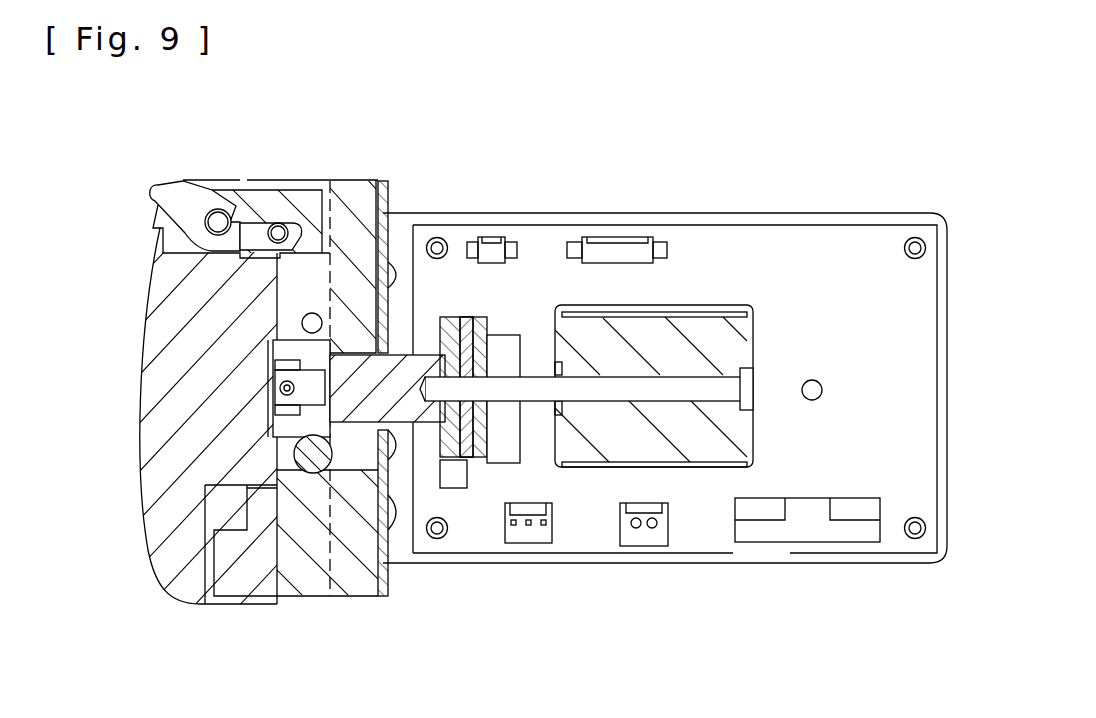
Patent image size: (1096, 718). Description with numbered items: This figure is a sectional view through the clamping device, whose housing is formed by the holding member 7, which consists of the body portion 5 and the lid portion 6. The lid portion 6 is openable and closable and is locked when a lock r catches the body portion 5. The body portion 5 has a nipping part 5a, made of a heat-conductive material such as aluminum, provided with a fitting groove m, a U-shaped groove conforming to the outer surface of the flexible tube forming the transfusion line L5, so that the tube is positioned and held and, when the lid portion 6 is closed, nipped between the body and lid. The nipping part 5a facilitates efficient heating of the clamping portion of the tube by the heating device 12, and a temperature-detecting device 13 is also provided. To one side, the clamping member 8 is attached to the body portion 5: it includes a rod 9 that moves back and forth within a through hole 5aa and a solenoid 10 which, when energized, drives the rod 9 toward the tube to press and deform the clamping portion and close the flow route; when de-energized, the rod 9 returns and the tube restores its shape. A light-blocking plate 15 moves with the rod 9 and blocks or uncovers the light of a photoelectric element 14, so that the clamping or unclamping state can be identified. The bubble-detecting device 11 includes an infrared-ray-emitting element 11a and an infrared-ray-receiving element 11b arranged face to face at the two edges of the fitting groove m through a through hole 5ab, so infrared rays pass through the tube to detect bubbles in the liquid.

The body portion 5 is at (343, 190).
The nipping part 5a is at (258, 500).
The through hole 5aa is at (352, 356).
The through hole 5ab is at (378, 565).
The lid portion 6 is at (152, 288).
The holding member 7 is at (128, 244).
The clamping member 8 is at (522, 326).
The rod 9 is at (392, 358).
The solenoid 10 is at (747, 339).
The bubble-detecting device 11 is at (266, 408).
The infrared-ray-emitting element 11a is at (278, 430).
The infrared-ray-receiving element 11b is at (290, 355).
The heating device 12 is at (300, 462).
The temperature-detecting device 13 is at (300, 323).
The photoelectric element 14 is at (458, 490).
The light-blocking plate 15 is at (500, 462).
The transfusion line L5 is at (280, 388).
The fitting groove m is at (330, 573).
The lock r is at (150, 190).